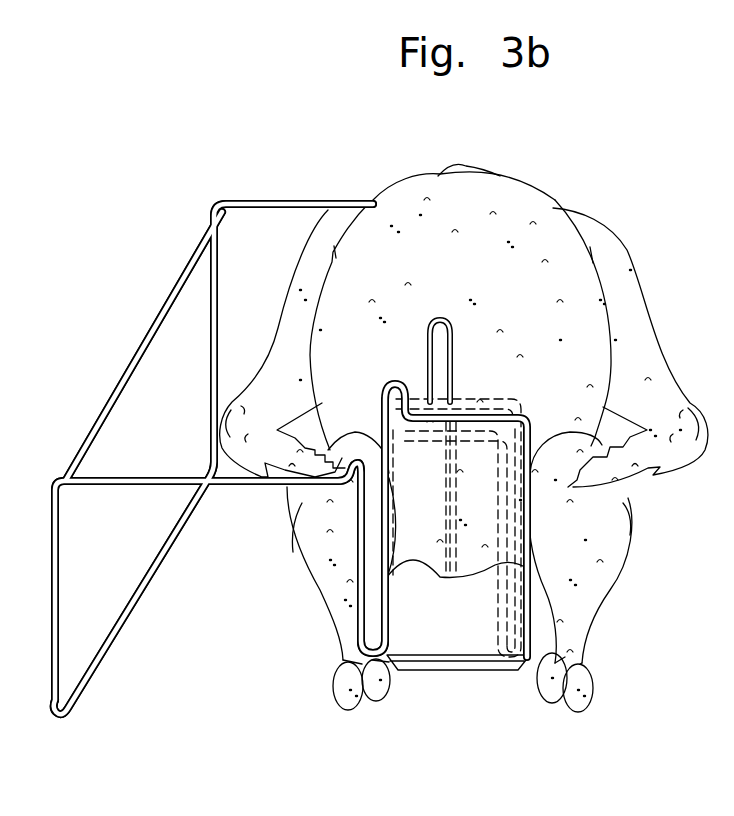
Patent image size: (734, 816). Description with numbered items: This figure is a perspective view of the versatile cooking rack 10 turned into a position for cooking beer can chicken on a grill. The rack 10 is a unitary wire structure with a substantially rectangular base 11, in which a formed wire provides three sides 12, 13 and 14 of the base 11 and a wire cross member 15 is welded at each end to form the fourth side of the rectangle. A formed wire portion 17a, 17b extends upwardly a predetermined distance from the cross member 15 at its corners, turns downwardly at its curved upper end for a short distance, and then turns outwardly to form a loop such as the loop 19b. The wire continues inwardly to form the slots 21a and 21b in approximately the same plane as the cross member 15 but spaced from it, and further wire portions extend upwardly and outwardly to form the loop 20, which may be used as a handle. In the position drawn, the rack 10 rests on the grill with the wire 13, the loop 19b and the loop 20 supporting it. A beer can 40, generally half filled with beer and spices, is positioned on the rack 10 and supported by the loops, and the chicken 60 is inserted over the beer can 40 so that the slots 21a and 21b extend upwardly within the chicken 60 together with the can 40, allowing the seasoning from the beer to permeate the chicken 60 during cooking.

The cooking rack 10 is at (143, 322).
The base 11 is at (98, 404).
The side of base 12 is at (220, 274).
The side of base 13 is at (133, 610).
The side of base 14 is at (62, 585).
The wire cross member 15 is at (140, 363).
The formed wire portion 17a is at (275, 200).
The formed wire portion 17b is at (240, 486).
The loop 19b is at (337, 665).
The loop 20 is at (517, 660).
The slot 21a is at (440, 318).
The slot 21b is at (393, 382).
The beer can 40 is at (457, 643).
The chicken 60 is at (541, 186).